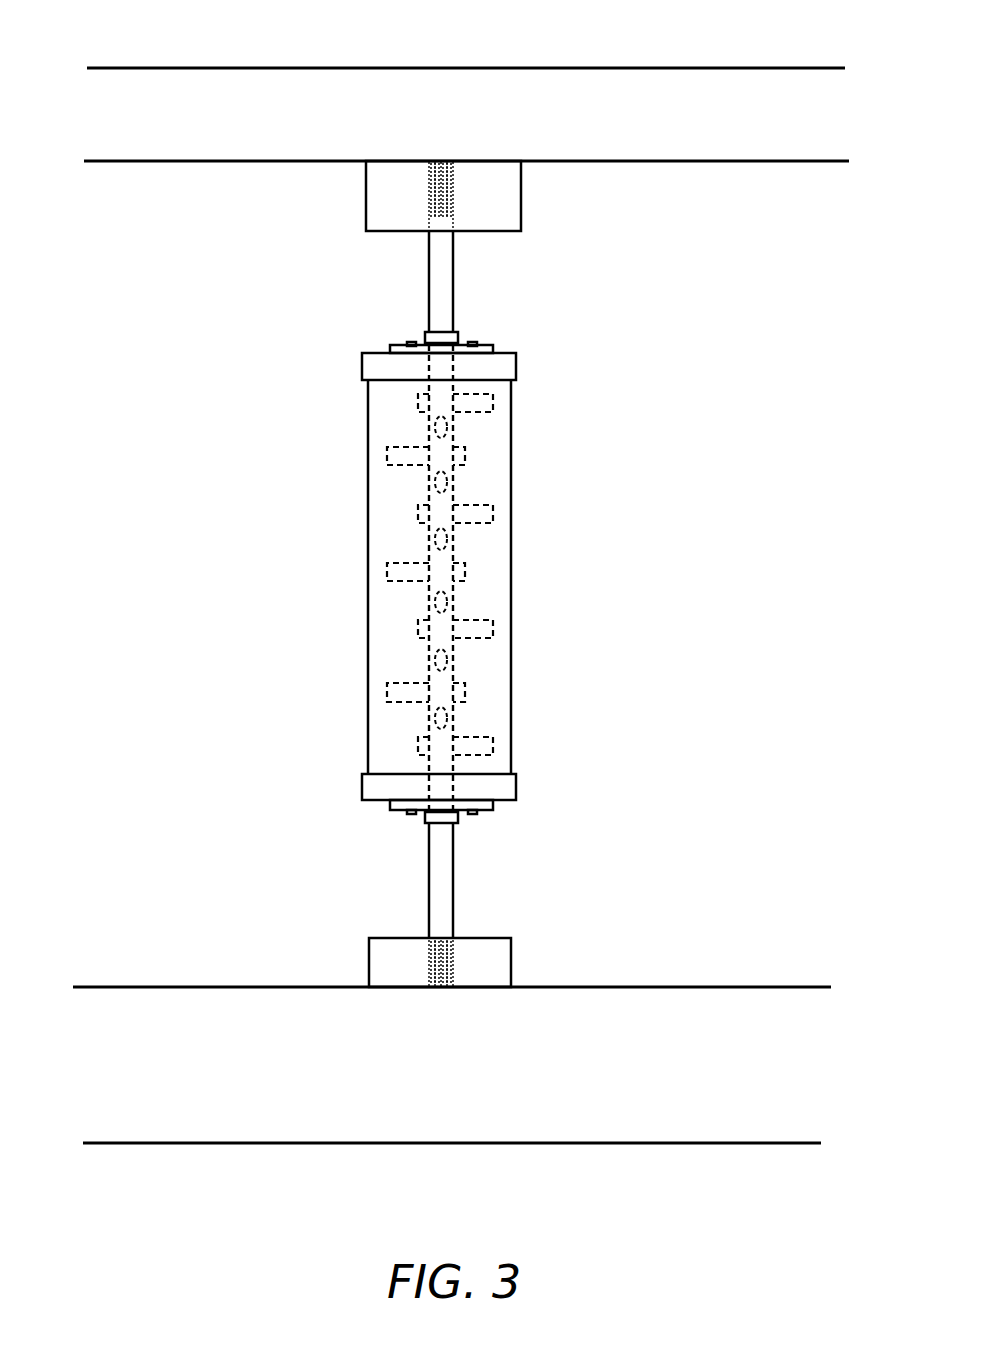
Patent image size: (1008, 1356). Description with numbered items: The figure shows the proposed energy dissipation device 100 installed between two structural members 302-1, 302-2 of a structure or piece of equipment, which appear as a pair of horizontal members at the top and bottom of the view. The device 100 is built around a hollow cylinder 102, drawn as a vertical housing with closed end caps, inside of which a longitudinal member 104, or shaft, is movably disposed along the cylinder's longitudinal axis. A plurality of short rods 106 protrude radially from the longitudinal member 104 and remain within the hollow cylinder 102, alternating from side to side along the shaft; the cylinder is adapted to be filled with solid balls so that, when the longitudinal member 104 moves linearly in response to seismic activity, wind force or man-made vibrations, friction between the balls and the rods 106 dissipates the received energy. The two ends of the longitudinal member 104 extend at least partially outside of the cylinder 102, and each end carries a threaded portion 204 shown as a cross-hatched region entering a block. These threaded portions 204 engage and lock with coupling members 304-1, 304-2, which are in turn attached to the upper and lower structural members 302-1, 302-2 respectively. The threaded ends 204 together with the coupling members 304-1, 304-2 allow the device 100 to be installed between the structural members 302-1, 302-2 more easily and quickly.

The energy dissipation device 100 is at (403, 584).
The hollow cylinder 102 is at (367, 661).
The longitudinal member 104 is at (453, 431).
The short rods 106 is at (493, 504).
The threaded portion 204 is at (431, 177).
The structural member 302-1 is at (321, 69).
The structural member 302-2 is at (309, 1011).
The coupling member 304-1 is at (401, 205).
The coupling member 304-2 is at (386, 939).